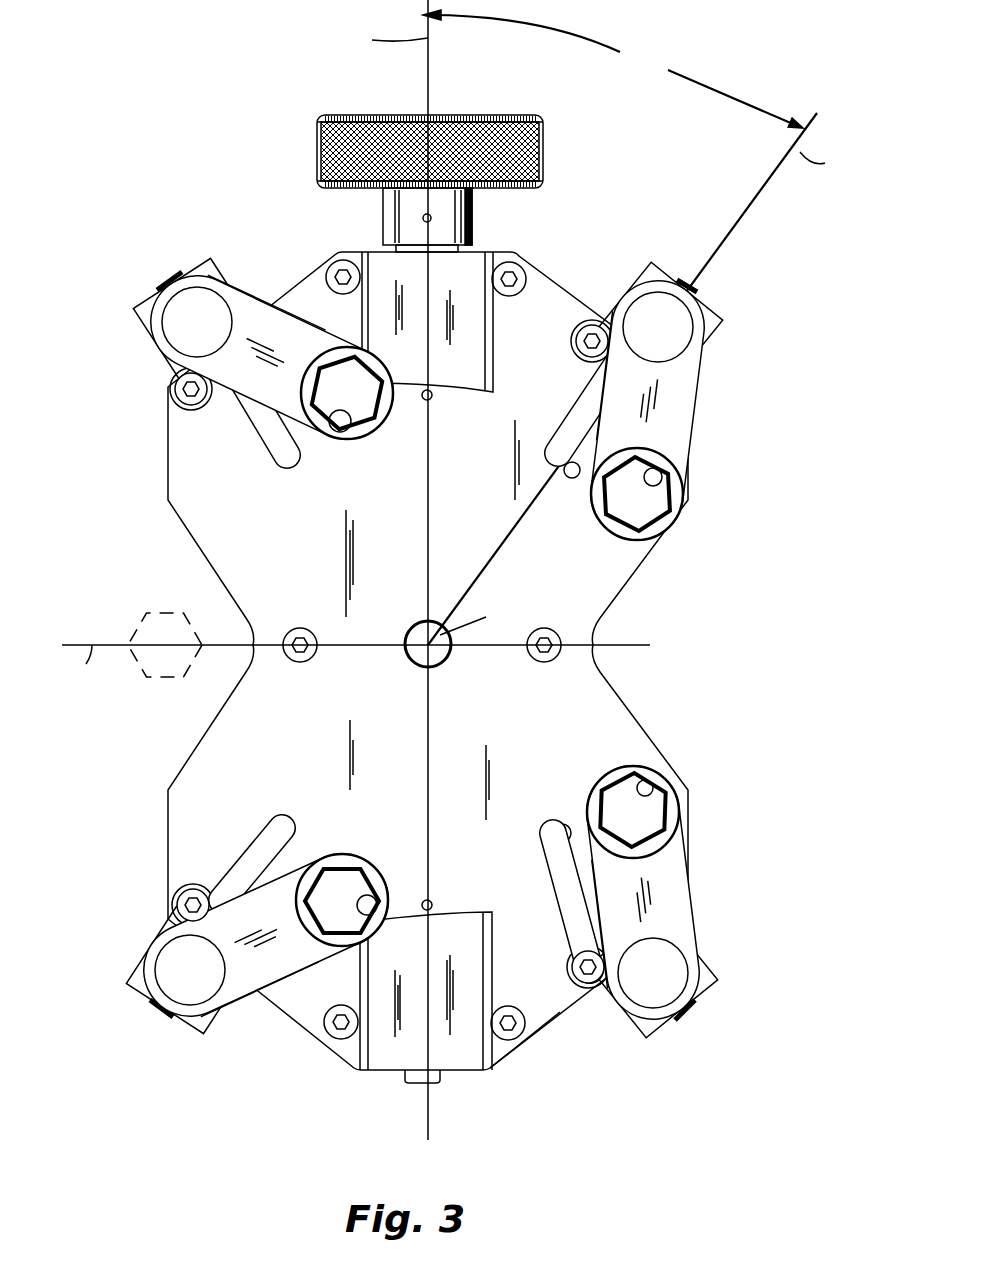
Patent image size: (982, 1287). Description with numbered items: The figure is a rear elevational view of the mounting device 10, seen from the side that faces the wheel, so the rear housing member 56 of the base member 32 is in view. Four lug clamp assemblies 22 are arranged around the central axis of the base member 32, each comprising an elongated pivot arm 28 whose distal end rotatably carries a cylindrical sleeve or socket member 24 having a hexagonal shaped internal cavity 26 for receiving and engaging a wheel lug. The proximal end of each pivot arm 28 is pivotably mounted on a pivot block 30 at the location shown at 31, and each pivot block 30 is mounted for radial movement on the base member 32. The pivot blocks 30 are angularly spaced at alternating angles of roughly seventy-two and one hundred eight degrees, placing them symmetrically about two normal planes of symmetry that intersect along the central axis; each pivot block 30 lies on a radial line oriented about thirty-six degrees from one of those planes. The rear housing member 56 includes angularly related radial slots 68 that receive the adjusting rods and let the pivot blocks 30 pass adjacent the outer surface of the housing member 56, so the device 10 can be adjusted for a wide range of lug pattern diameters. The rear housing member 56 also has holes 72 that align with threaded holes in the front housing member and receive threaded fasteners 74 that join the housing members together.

The mounting device 10 is at (442, 592).
The lug clamp assembly 22 is at (243, 283).
The sleeve or socket member 24 is at (380, 438).
The hexagonal shaped internal cavity 26 is at (343, 440).
The pivot arm 28 is at (300, 316).
The pivot block 30 is at (138, 318).
The pivot mounting 31 is at (206, 262).
The base member 32 is at (546, 1050).
The rear housing member 56 is at (258, 553).
The radial slot 68 is at (276, 444).
The hole 72 is at (182, 402).
The threaded fastener 74 is at (172, 378).